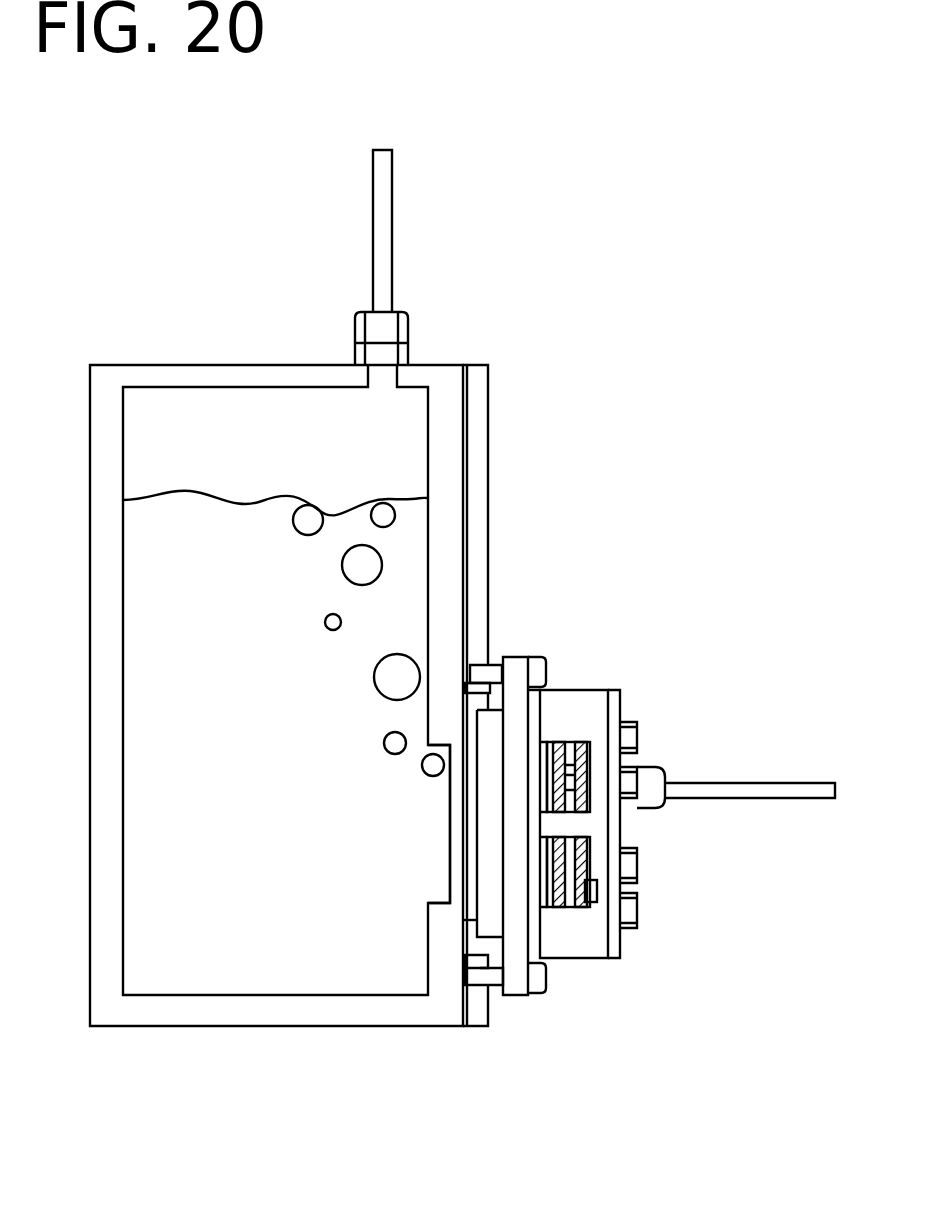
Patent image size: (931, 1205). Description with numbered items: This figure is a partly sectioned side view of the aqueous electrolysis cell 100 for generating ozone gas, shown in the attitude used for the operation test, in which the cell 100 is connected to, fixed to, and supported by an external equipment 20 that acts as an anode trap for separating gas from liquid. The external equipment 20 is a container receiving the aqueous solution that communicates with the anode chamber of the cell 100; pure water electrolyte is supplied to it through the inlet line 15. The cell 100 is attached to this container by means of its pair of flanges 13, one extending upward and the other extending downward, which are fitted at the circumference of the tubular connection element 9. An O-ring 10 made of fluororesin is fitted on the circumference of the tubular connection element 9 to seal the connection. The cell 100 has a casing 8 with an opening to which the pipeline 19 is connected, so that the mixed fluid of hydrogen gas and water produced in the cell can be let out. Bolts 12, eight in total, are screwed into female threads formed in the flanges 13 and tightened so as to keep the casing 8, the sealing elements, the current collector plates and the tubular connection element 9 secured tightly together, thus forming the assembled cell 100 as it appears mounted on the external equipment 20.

The casing 8 is at (592, 947).
The tubular connection element 9 is at (452, 843).
The O-ring 10 is at (470, 812).
The bolts 12 is at (640, 862).
The flanges 13 is at (517, 985).
The inlet line for electrolyte 15 is at (392, 187).
The pipeline 19 is at (703, 787).
The external equipment 20 is at (445, 365).
The cell 100 is at (563, 703).